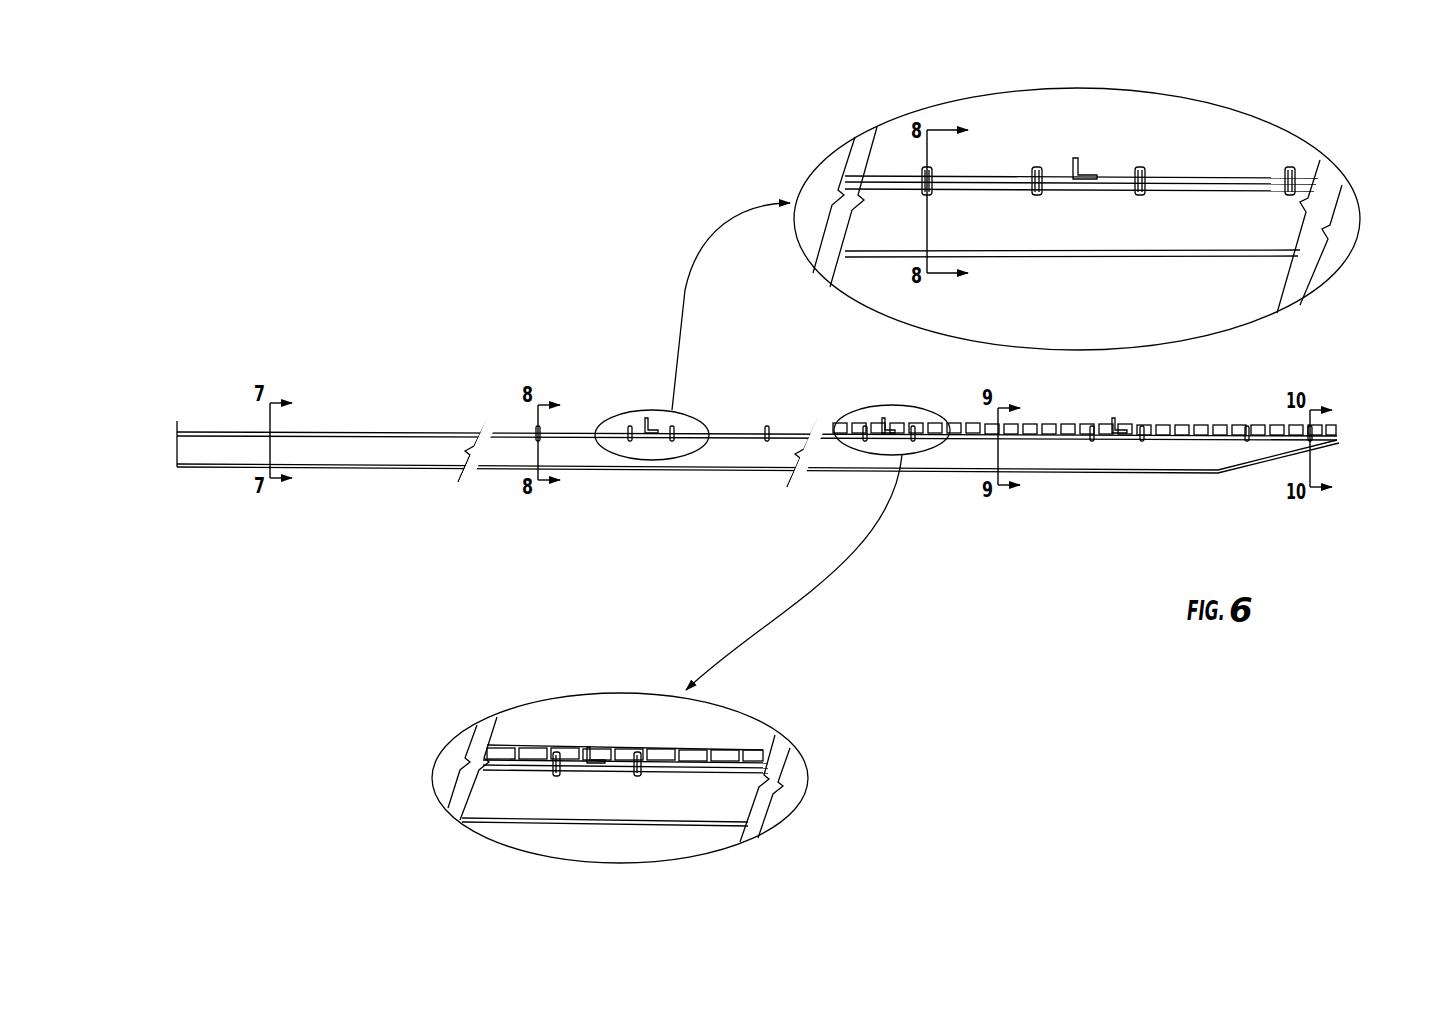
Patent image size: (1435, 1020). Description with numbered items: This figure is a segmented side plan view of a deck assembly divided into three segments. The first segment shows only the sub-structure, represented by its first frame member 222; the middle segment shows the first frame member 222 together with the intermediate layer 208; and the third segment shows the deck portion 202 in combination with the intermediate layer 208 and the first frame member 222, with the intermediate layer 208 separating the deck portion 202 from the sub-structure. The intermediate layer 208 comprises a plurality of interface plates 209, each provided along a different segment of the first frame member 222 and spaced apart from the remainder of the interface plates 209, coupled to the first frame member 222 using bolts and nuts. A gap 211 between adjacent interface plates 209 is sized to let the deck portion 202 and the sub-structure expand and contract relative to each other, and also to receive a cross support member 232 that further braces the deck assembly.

The deck portion 202 is at (1346, 428).
The intermediate layer 208 is at (584, 426).
The interface plate 209 is at (1226, 177).
The gap 211 is at (1082, 161).
The first frame member 222 is at (182, 448).
The cross support member 232 is at (1108, 170).